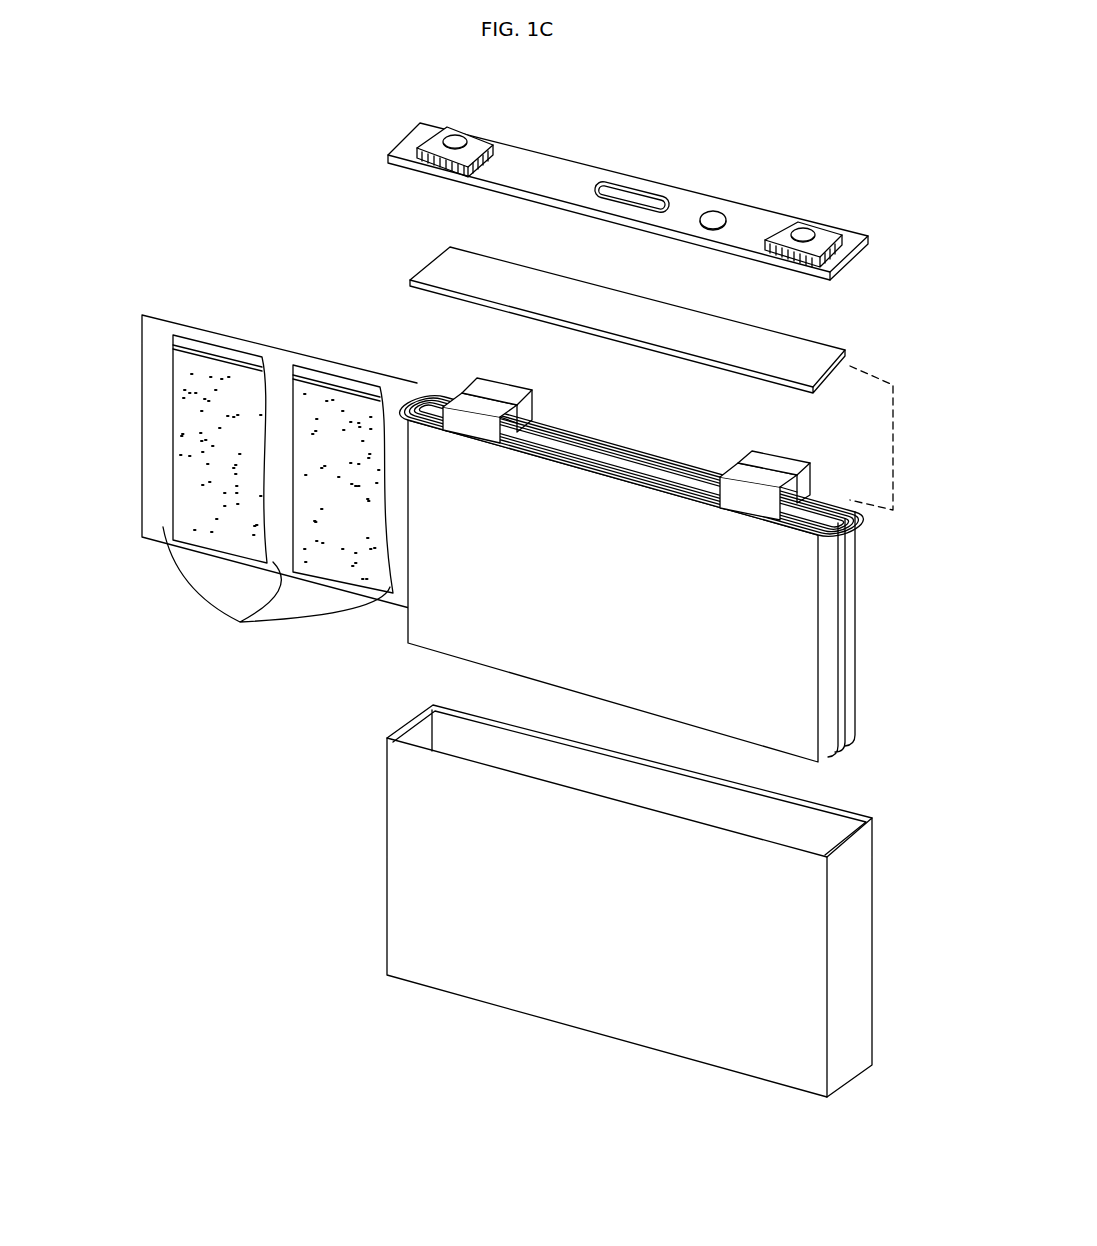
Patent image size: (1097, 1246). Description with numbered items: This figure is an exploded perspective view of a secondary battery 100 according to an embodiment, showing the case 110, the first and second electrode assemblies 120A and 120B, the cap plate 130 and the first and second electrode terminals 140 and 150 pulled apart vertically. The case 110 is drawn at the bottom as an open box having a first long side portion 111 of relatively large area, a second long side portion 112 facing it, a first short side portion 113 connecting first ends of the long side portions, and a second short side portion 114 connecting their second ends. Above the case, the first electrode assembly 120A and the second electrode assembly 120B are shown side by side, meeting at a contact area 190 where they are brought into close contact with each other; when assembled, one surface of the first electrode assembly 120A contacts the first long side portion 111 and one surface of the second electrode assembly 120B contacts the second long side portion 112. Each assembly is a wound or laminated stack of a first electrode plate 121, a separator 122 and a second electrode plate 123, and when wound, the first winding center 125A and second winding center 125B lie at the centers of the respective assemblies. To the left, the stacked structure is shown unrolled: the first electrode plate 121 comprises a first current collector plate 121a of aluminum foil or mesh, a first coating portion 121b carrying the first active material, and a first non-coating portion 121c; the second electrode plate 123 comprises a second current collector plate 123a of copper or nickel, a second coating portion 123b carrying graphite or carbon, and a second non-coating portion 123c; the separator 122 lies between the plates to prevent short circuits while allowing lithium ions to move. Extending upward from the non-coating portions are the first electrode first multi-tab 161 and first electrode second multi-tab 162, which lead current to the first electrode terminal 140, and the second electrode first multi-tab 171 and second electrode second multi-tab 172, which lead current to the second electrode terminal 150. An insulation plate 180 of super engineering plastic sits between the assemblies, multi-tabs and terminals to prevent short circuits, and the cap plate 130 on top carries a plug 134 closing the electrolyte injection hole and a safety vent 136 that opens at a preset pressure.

The secondary battery 100 is at (929, 152).
The case 110 is at (644, 898).
The first long side portion 111 is at (858, 812).
The second long side portion 112 is at (617, 1032).
The first short side portion 113 is at (407, 722).
The second short side portion 114 is at (866, 897).
The first electrode assembly 120A is at (681, 564).
The second electrode assembly 120B is at (845, 652).
The first electrode plate 121 is at (160, 408).
The first current collector plate 121a is at (167, 363).
The first coating portion 121b is at (215, 400).
The first non-coating portion 121c is at (222, 351).
The separator 122 is at (279, 483).
The second electrode plate 123 is at (222, 433).
The second current collector plate 123a is at (291, 403).
The second coating portion 123b is at (330, 477).
The second non-coating portion 123c is at (318, 376).
The first winding center 125A is at (601, 442).
The second winding center 125B is at (667, 453).
The cap plate 130 is at (880, 240).
The plug 134 is at (713, 212).
The safety vent 136 is at (640, 186).
The first electrode terminal 140 is at (472, 124).
The second electrode terminal 150 is at (824, 214).
The first electrode first multi-tab 161 is at (497, 390).
The first electrode second multi-tab 162 is at (458, 402).
The second electrode first multi-tab 171 is at (780, 462).
The second electrode second multi-tab 172 is at (733, 472).
The insulation plate 180 is at (836, 356).
The contact area 190 is at (557, 432).